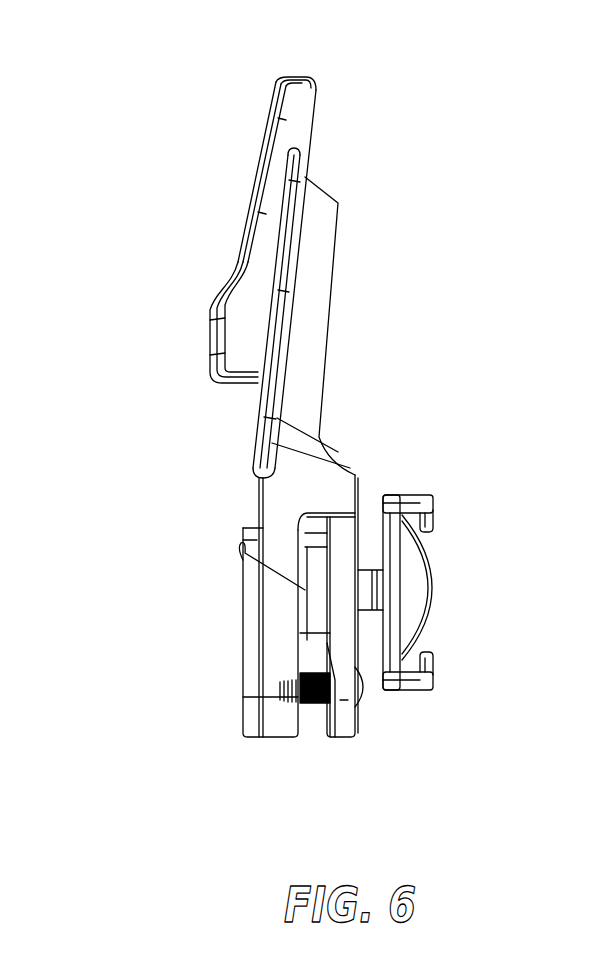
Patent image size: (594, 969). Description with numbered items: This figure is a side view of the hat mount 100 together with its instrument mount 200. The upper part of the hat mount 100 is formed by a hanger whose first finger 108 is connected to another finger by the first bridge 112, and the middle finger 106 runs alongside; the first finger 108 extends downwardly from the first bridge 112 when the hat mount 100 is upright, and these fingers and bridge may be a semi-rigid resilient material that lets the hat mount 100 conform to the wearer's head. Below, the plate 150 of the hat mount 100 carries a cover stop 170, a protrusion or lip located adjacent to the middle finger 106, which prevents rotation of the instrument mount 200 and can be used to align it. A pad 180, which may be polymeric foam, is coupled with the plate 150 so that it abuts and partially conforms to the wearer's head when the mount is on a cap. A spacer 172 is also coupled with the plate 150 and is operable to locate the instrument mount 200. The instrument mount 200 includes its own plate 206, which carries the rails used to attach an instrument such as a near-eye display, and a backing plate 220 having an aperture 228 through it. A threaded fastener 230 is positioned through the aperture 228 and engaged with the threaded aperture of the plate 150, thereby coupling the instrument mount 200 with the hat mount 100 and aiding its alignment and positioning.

The hat mount 100 is at (200, 88).
The middle finger 106 is at (332, 198).
The first finger 108 is at (210, 322).
The first bridge 112 is at (272, 82).
The plate 150 is at (273, 735).
The cover stop 170 is at (340, 450).
The spacer 172 is at (243, 587).
The pad 180 is at (243, 672).
The instrument mount 200 is at (455, 500).
The plate 206 is at (393, 542).
The backing plate 220 is at (350, 737).
The aperture 228 is at (360, 698).
The threaded fastener 230 is at (362, 703).